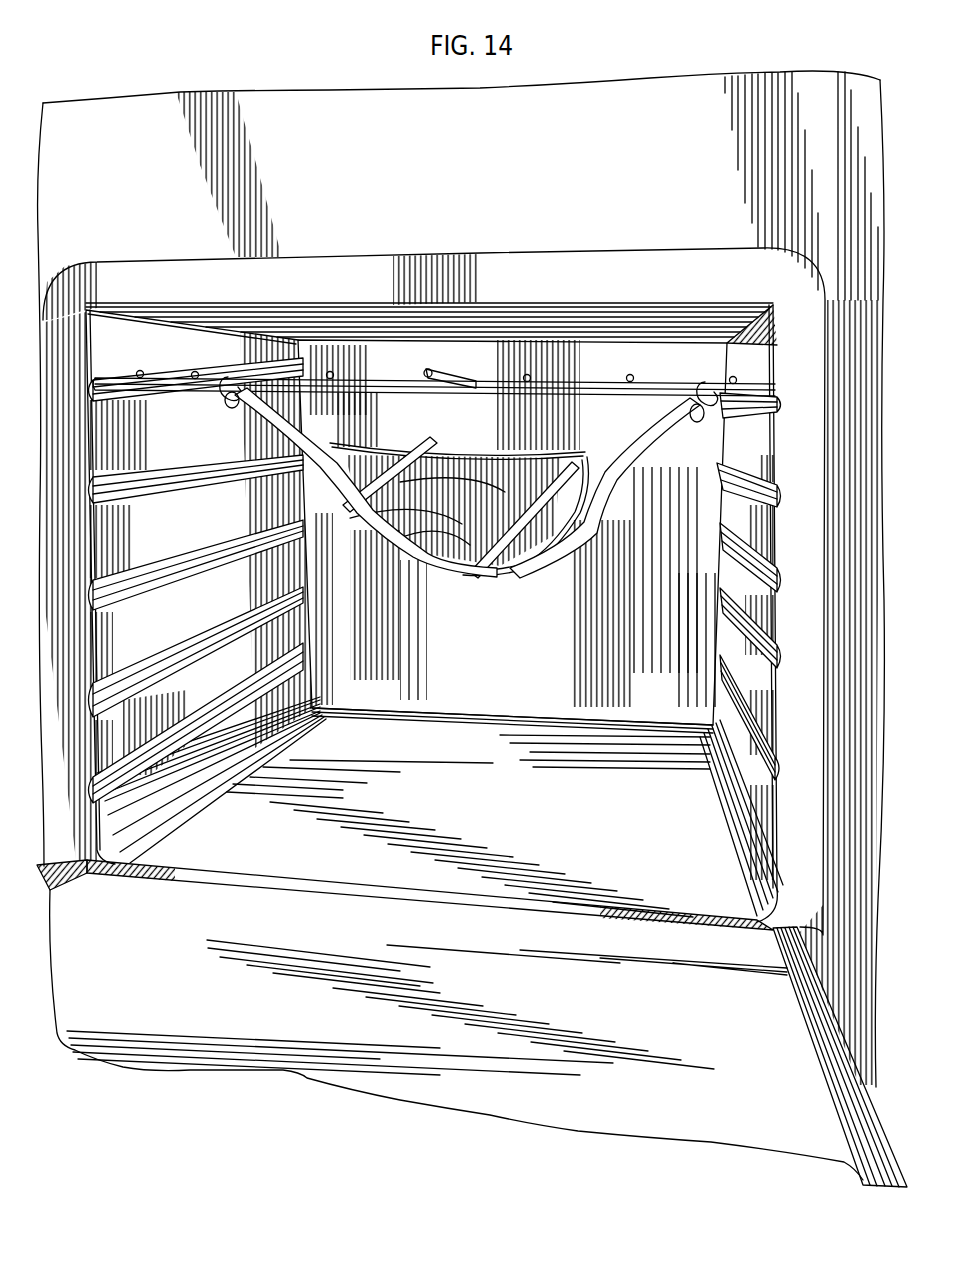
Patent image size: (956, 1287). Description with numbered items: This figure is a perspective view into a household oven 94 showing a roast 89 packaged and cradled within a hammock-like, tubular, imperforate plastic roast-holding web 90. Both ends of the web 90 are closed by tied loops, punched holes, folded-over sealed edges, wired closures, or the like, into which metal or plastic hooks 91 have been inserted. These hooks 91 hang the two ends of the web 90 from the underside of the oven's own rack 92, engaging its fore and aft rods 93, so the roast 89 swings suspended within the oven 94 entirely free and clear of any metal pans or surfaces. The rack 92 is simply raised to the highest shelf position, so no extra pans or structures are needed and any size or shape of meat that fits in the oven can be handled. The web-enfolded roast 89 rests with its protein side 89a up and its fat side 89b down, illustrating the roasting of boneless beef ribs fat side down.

The roast 89 is at (467, 499).
The protein side 89a is at (458, 452).
The fat side 89b is at (500, 565).
The roast-holding web 90 is at (645, 470).
The hooks 91 is at (220, 404).
The oven rack 92 is at (585, 380).
The fore and aft rods 93 is at (228, 376).
The oven 94 is at (505, 652).